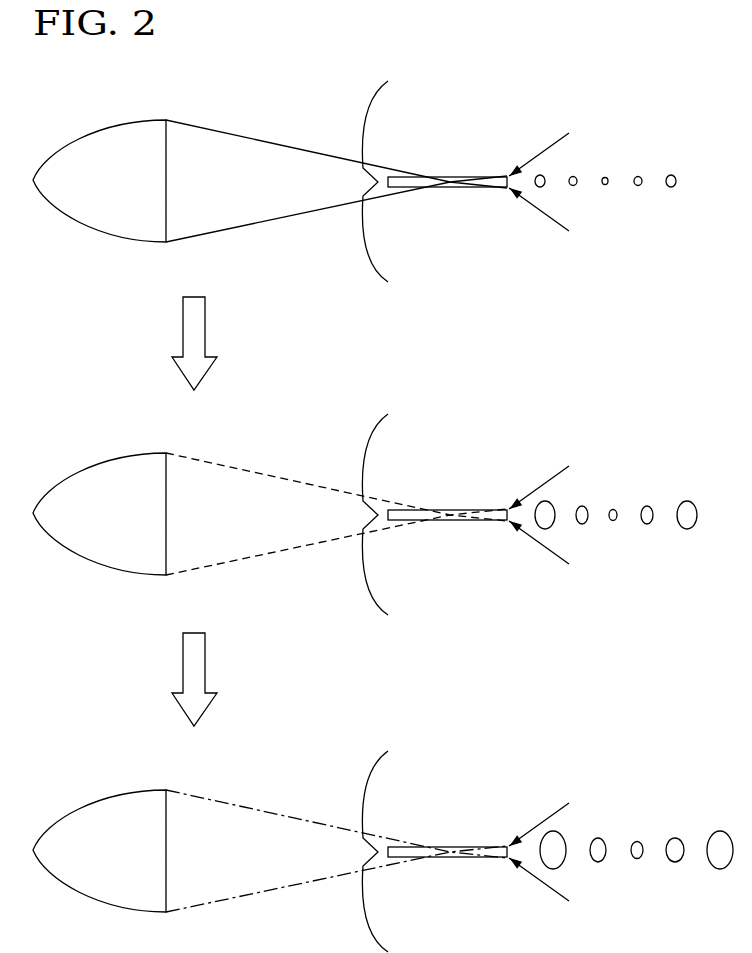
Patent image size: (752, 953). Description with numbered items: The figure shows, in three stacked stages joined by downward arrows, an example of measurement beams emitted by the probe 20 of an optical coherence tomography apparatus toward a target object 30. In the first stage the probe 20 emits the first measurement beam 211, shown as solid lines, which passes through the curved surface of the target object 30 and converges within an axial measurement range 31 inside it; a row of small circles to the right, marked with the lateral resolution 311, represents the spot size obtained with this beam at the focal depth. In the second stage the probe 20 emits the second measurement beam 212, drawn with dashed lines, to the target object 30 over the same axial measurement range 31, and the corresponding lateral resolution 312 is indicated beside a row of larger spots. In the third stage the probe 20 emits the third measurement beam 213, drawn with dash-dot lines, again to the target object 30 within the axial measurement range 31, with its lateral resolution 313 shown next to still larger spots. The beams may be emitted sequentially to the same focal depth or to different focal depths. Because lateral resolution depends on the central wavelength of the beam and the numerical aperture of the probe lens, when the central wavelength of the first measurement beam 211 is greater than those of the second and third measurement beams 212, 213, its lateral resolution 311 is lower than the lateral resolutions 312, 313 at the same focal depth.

The probe 20 is at (88, 138).
The first measurement beam 211 is at (258, 223).
The second measurement beam 212 is at (336, 489).
The third measurement beam 213 is at (336, 826).
The target object 30 is at (380, 88).
The axial measurement range 31 is at (448, 175).
The lateral resolution of the first measurement beam 311 is at (615, 145).
The lateral resolution of the second measurement beam 312 is at (623, 475).
The lateral resolution of the third measurement beam 313 is at (648, 807).